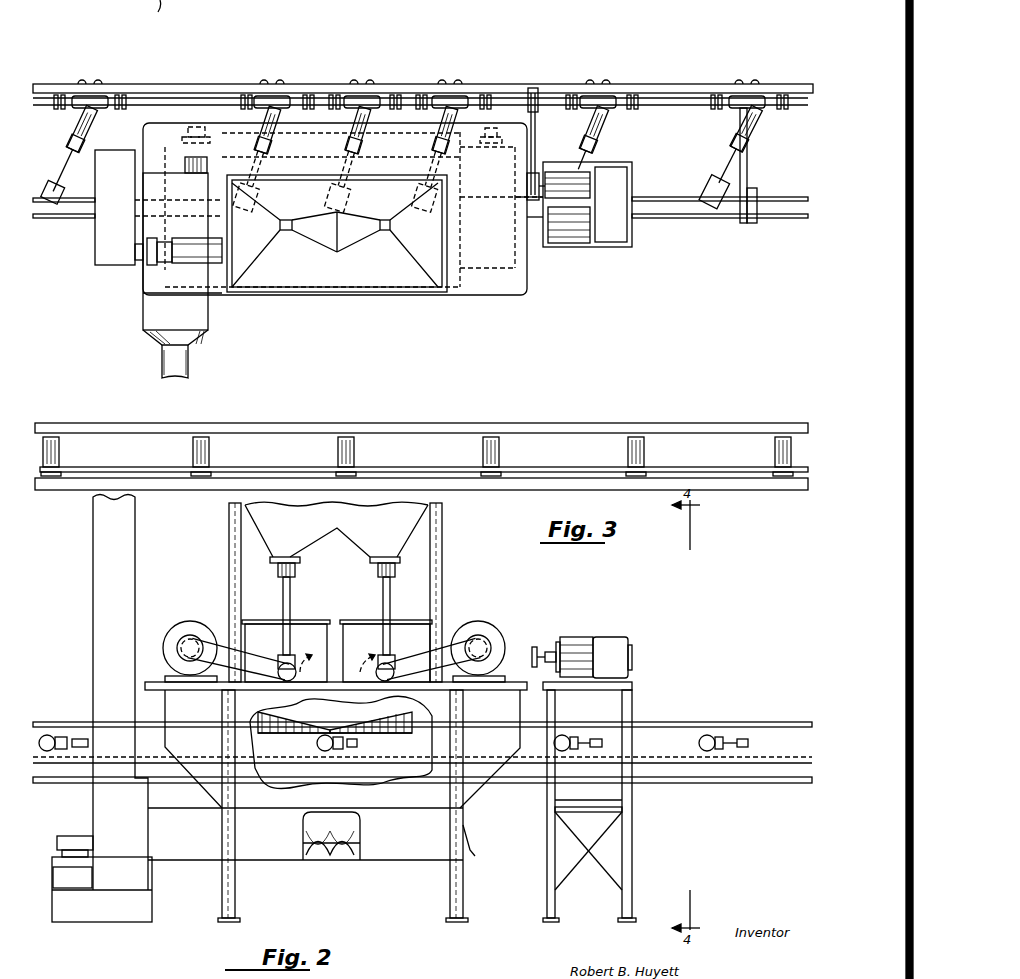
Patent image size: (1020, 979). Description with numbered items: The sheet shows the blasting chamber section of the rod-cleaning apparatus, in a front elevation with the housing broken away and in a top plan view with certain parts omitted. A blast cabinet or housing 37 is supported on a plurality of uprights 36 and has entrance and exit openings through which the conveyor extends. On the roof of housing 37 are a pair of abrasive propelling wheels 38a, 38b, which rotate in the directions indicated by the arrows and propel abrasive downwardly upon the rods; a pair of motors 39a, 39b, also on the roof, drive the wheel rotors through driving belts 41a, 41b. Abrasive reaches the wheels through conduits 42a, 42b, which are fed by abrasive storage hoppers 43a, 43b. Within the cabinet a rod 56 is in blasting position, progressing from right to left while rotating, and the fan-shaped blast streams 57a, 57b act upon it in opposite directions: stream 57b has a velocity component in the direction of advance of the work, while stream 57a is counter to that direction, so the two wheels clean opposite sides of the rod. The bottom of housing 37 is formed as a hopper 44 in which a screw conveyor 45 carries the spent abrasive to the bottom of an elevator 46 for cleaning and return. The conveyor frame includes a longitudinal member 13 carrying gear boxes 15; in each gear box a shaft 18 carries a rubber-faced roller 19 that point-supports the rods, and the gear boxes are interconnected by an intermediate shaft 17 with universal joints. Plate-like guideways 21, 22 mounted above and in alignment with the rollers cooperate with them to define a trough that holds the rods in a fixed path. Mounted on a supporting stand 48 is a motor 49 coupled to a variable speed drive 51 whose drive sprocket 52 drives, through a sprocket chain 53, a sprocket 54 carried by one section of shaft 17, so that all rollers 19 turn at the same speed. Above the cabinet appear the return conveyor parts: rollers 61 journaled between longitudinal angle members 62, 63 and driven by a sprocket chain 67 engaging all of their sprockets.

In FIG. 3, the longitudinal member 13 is at (531, 90).
In FIG. 3, the gear box 15 is at (78, 128).
In FIG. 3, the intermediate shaft 17 is at (175, 97).
In FIG. 3, the shaft 18 is at (62, 190).
In FIG. 3, the roller 19 is at (56, 218).
In FIG. 2, the roller 19 is at (48, 736).
In FIG. 3, the guideway 21 is at (660, 218).
In FIG. 3, the guideway 22 is at (658, 197).
In FIG. 2, the upright 36 is at (234, 902).
In FIG. 3, the blast cabinet or housing 37 is at (455, 272).
In FIG. 2, the blast cabinet or housing 37 is at (245, 790).
In FIG. 2, the abrasive propelling wheel 38a is at (262, 636).
In FIG. 2, the abrasive propelling wheel 38b is at (406, 636).
In FIG. 2, the motor 39a is at (180, 626).
In FIG. 2, the motor 39b is at (482, 622).
In FIG. 2, the driving belt 41a is at (222, 642).
In FIG. 2, the driving belt 41b is at (456, 642).
In FIG. 2, the conduit 42a is at (290, 612).
In FIG. 2, the conduit 42b is at (382, 607).
In FIG. 3, the abrasive storage hopper 43a is at (282, 290).
In FIG. 2, the abrasive storage hopper 43a is at (305, 538).
In FIG. 3, the abrasive storage hopper 43b is at (404, 290).
In FIG. 2, the abrasive storage hopper 43b is at (353, 540).
In FIG. 2, the hopper 44 is at (412, 853).
In FIG. 2, the screw conveyor 45 is at (330, 855).
In FIG. 3, the elevator 46 is at (118, 264).
In FIG. 2, the elevator 46 is at (140, 878).
In FIG. 2, the supporting stand 48 is at (626, 862).
In FIG. 3, the motor 49 is at (578, 247).
In FIG. 2, the motor 49 is at (574, 640).
In FIG. 3, the variable speed drive 51 is at (630, 166).
In FIG. 2, the variable speed drive 51 is at (618, 650).
In FIG. 3, the drive sprocket 52 is at (527, 188).
In FIG. 2, the drive sprocket 52 is at (534, 648).
In FIG. 3, the sprocket chain 53 is at (537, 154).
In FIG. 3, the sprocket 54 is at (538, 108).
In FIG. 2, the rod 56 is at (396, 736).
In FIG. 2, the blast stream 57a is at (258, 722).
In FIG. 2, the blast stream 57b is at (410, 716).
In FIG. 2, the roller 61 is at (208, 460).
In FIG. 3, the longitudinal angle member 62 is at (144, 12).
In FIG. 2, the longitudinal angle member 62 is at (95, 480).
In FIG. 2, the longitudinal angle member 63 is at (103, 423).
In FIG. 2, the sprocket chain 67 is at (271, 467).